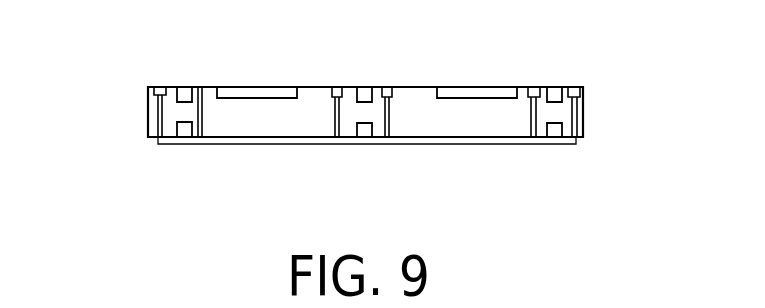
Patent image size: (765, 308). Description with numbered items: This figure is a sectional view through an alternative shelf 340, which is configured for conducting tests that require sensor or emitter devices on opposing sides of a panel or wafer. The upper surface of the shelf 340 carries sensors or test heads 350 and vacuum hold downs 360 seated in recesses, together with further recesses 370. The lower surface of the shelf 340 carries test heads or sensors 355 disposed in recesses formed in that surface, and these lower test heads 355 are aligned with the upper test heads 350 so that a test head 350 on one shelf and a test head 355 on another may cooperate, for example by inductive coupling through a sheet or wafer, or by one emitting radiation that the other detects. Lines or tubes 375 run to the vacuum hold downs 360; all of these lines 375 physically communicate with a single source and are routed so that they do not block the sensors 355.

The shelf 340 is at (583, 108).
The test heads 350 is at (558, 88).
The test heads 355 is at (184, 135).
The vacuum hold downs 360 is at (573, 89).
The recesses 370 is at (448, 88).
The lines 375 is at (160, 113).